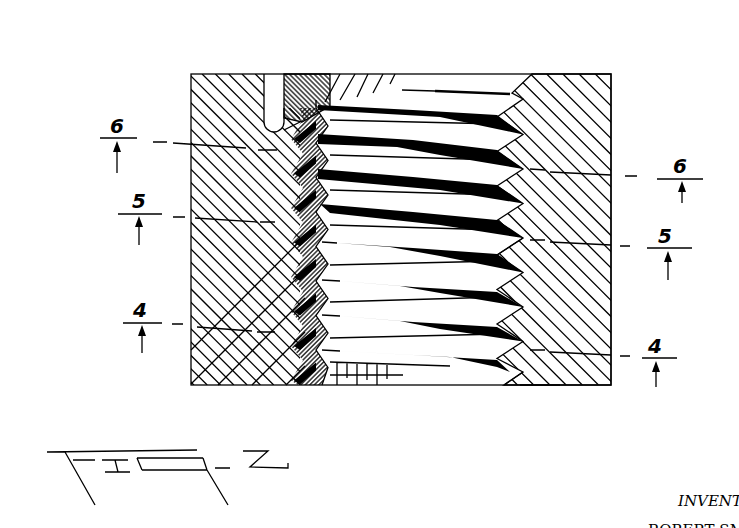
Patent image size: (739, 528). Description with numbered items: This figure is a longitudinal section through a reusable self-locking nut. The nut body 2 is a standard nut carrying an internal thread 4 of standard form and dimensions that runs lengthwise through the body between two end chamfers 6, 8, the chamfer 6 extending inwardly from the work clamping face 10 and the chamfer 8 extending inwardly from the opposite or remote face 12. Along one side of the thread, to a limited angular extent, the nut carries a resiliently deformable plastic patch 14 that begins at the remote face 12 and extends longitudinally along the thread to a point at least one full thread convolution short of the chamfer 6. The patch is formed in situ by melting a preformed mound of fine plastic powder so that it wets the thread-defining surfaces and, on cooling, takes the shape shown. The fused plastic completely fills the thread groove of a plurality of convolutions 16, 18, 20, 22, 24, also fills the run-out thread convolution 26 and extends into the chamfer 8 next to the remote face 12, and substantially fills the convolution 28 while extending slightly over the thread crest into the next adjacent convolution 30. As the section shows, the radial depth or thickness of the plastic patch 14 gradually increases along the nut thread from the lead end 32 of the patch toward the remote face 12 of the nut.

The nut body 2 is at (585, 386).
The internal thread 4 is at (525, 249).
The end chamfer 6 is at (513, 84).
The end chamfer 8 is at (510, 374).
The work clamping face 10 is at (568, 74).
The remote face 12 is at (540, 386).
The plastic patch 14 is at (332, 386).
The thread convolution 16 is at (300, 184).
The thread convolution 18 is at (300, 230).
The thread convolution 20 is at (300, 262).
The thread convolution 22 is at (286, 362).
The thread convolution 24 is at (218, 385).
The run-out thread convolution 26 is at (253, 386).
The thread convolution 28 is at (277, 160).
The thread convolution 30 is at (271, 126).
The lead end 32 is at (312, 128).